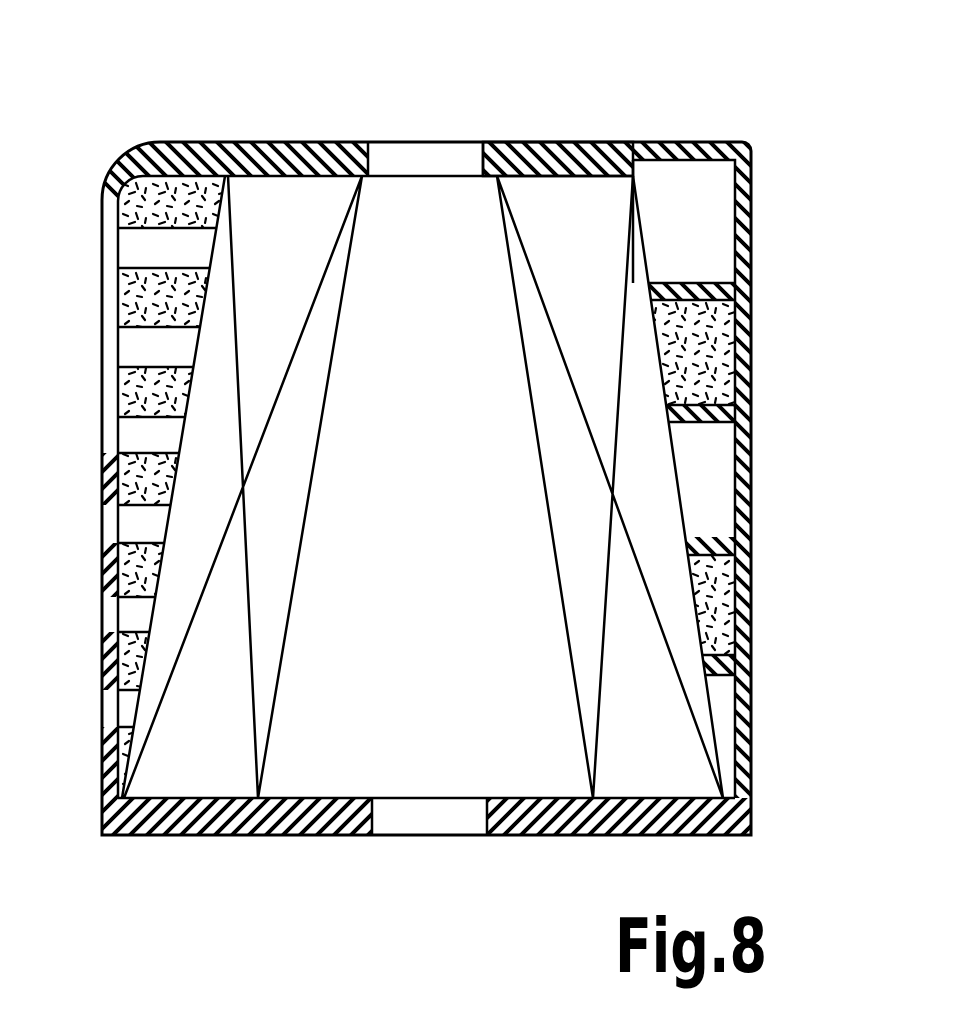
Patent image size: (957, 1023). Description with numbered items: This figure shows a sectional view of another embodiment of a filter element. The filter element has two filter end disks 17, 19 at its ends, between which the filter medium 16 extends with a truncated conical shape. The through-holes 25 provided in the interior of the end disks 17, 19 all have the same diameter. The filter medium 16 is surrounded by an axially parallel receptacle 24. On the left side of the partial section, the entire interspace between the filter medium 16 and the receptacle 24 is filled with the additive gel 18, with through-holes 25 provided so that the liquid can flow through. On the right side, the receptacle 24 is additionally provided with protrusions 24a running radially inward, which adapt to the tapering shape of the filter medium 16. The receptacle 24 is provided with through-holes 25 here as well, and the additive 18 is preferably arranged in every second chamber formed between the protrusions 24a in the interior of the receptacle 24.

The filter medium 16 is at (596, 536).
The filter end disk 17 is at (570, 142).
The additive gel 18 is at (118, 166).
The filter end disk 19 is at (209, 825).
The receptacle 24 is at (191, 142).
The protrusions 24a is at (670, 283).
The through-holes 25 is at (135, 247).